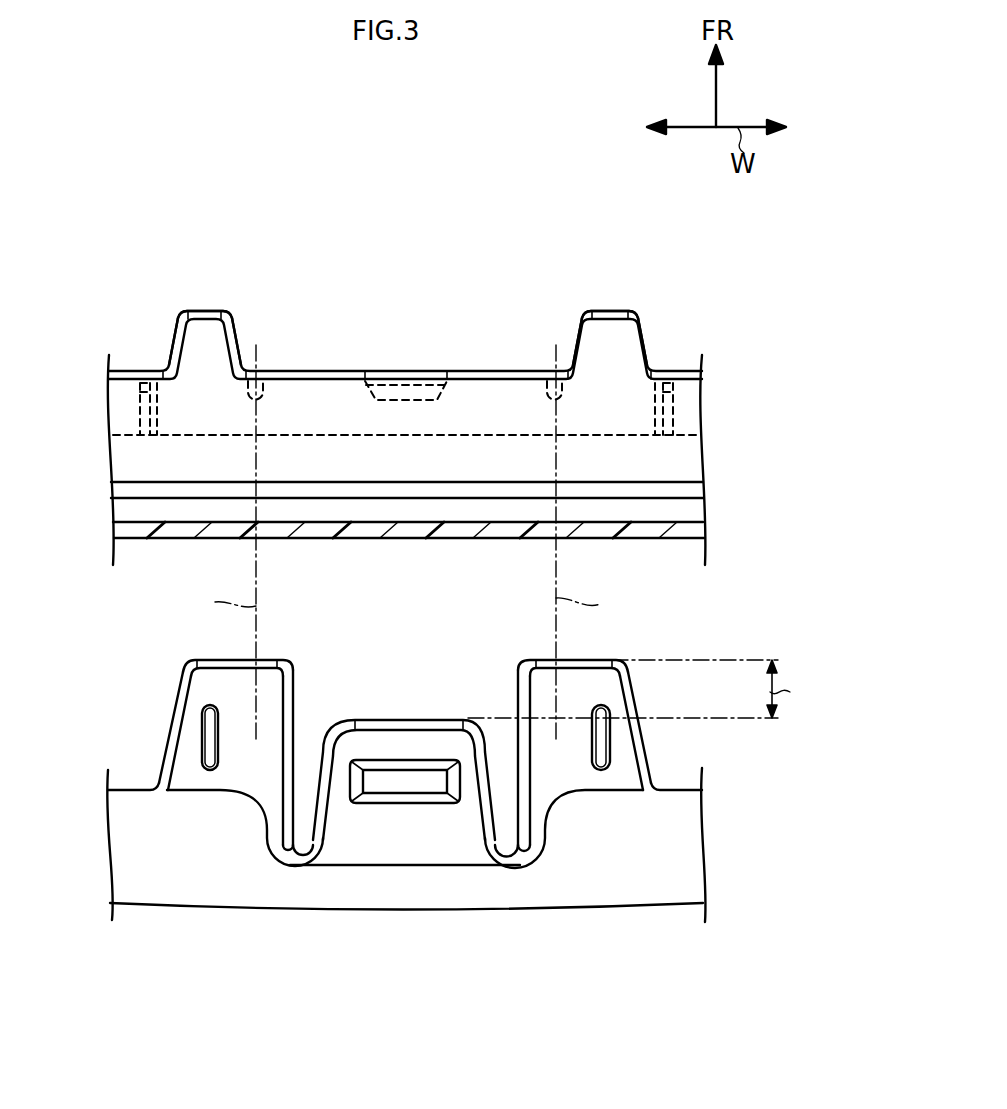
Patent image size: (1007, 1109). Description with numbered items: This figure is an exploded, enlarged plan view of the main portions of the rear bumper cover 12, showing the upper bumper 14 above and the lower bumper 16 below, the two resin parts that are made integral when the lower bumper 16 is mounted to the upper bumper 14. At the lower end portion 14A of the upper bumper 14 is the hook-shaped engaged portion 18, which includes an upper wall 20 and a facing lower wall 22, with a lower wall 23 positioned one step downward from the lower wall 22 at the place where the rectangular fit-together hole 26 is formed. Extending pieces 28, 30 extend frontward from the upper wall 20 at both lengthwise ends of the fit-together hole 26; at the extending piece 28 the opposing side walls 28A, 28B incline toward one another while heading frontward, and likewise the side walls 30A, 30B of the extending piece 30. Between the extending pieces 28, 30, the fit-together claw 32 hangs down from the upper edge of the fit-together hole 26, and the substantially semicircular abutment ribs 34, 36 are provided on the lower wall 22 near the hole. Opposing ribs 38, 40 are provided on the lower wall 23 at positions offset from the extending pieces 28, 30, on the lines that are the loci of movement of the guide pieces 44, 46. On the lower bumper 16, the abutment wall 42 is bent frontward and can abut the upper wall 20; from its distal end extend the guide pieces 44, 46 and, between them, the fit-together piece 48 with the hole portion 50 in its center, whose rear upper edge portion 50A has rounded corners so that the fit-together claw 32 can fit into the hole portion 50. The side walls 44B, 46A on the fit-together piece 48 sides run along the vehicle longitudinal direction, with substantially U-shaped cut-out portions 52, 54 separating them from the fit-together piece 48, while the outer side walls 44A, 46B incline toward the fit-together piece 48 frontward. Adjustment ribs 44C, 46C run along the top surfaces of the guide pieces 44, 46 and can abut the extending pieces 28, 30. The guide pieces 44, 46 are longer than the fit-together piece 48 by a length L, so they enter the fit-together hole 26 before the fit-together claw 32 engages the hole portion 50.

The rear bumper cover 12 is at (714, 266).
The upper bumper 14 is at (730, 358).
The lower end portion 14A is at (414, 544).
The lower bumper 16 is at (724, 786).
The engaged portion 18 is at (716, 386).
The upper wall 20 is at (688, 463).
The lower wall 22 is at (118, 423).
The lower wall 23 is at (370, 420).
The fit-together hole 26 is at (668, 412).
The extending piece 28 is at (201, 325).
The side wall 28A is at (174, 340).
The side wall 28B is at (237, 340).
The extending piece 30 is at (606, 325).
The side wall 30A is at (578, 340).
The side wall 30B is at (640, 340).
The fit-together claw 32 is at (420, 378).
The abutment rib 34 is at (140, 404).
The abutment rib 36 is at (668, 408).
The opposing rib 38 is at (264, 384).
The opposing rib 40 is at (547, 384).
The abutment wall 42 is at (683, 850).
The guide piece 44 is at (230, 685).
The side wall 44A is at (180, 697).
The side wall 44B is at (290, 702).
The adjustment rib 44C is at (208, 742).
The guide piece 46 is at (582, 685).
The side wall 46A is at (520, 702).
The side wall 46B is at (630, 697).
The adjustment rib 46C is at (602, 742).
The fit-together piece 48 is at (398, 745).
The hole portion 50 is at (447, 782).
The upper edge portion 50A is at (385, 800).
The cut-out portion 52 is at (305, 858).
The cut-out portion 54 is at (503, 858).